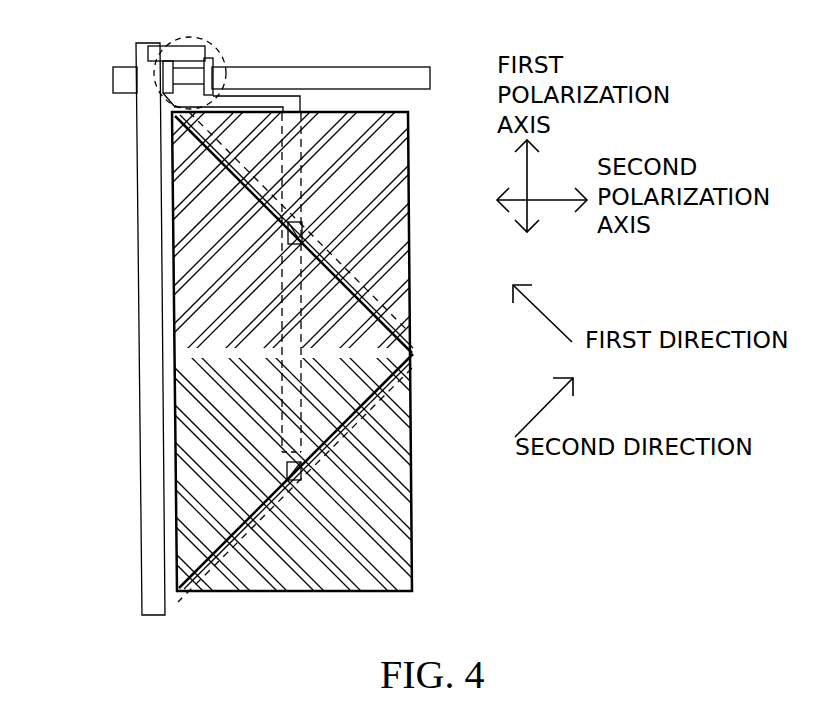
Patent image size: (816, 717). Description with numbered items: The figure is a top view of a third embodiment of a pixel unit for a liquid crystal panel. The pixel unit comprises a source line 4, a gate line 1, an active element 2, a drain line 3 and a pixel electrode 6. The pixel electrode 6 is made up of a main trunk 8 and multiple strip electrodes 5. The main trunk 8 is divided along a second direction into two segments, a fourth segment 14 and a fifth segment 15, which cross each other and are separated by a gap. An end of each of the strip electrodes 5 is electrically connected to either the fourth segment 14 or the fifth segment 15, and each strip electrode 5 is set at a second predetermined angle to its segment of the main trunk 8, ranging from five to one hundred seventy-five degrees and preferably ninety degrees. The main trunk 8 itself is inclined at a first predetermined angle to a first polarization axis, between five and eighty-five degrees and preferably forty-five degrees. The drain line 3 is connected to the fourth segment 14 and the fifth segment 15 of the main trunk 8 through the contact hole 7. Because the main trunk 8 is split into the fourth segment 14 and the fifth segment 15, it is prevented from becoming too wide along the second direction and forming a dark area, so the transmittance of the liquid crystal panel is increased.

The gate line 1 is at (83, 78).
The active element 2 is at (217, 73).
The drain line 3 is at (321, 242).
The source line 4 is at (96, 329).
The strip electrodes 5 is at (220, 352).
The pixel electrode 6 is at (220, 351).
The contact hole 7 is at (381, 363).
The main trunk 8 is at (326, 357).
The fourth segment 14 is at (326, 319).
The fifth segment 15 is at (323, 433).